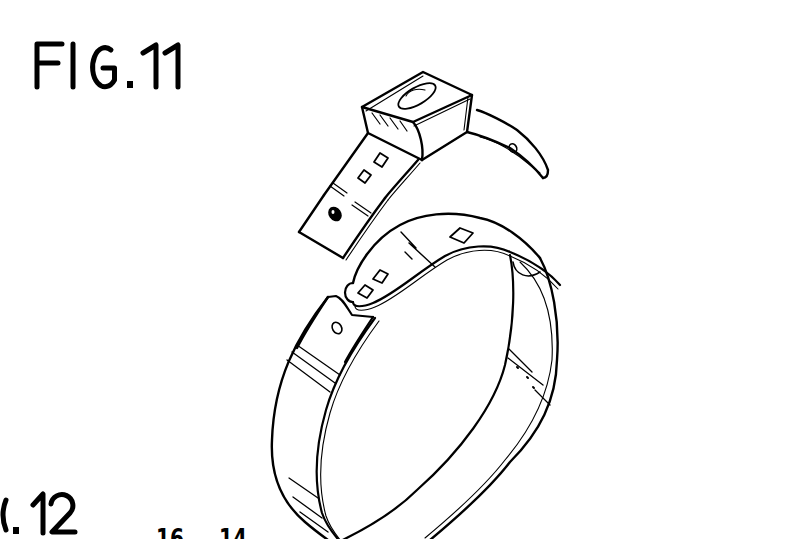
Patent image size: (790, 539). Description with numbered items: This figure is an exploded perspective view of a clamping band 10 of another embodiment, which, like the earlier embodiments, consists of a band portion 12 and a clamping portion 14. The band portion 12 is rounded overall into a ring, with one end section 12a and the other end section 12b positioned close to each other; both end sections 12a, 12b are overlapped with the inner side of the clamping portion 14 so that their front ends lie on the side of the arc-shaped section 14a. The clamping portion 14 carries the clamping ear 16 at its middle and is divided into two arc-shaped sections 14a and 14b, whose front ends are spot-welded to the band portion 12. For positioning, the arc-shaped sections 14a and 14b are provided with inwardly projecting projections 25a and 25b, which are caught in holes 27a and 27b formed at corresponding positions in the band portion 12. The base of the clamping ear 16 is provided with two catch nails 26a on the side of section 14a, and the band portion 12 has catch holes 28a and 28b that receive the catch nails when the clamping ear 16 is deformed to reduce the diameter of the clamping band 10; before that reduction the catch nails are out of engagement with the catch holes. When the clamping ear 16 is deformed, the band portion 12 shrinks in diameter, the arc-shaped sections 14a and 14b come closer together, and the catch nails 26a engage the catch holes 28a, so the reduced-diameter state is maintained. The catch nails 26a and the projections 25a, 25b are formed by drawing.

The clamping band 10 is at (604, 136).
The band portion 12 is at (521, 447).
The one end section 12a is at (364, 332).
The other end section 12b is at (428, 270).
The clamping portion 14 is at (350, 153).
The arc-shaped section 14a is at (323, 195).
The arc-shaped section 14b is at (499, 118).
The clamping ear 16 is at (423, 70).
The projection 25a is at (330, 216).
The projection 25b is at (515, 155).
The catch nails 26a is at (374, 157).
The hole 27a is at (333, 327).
The hole 27b is at (537, 273).
The catch holes 28a is at (376, 275).
The catch hole 28b is at (466, 231).